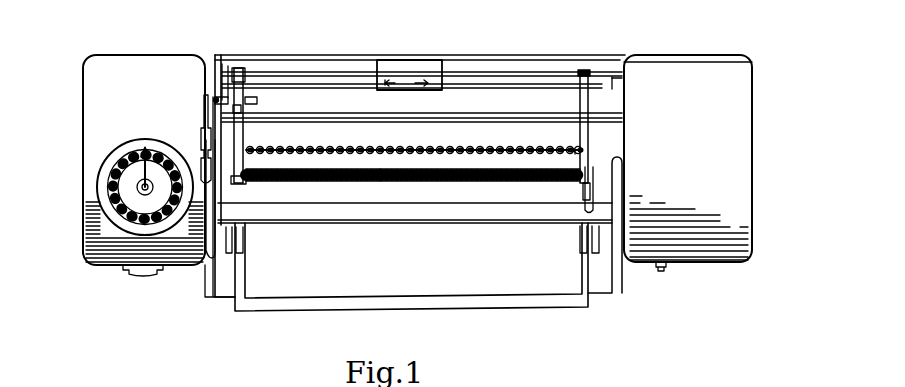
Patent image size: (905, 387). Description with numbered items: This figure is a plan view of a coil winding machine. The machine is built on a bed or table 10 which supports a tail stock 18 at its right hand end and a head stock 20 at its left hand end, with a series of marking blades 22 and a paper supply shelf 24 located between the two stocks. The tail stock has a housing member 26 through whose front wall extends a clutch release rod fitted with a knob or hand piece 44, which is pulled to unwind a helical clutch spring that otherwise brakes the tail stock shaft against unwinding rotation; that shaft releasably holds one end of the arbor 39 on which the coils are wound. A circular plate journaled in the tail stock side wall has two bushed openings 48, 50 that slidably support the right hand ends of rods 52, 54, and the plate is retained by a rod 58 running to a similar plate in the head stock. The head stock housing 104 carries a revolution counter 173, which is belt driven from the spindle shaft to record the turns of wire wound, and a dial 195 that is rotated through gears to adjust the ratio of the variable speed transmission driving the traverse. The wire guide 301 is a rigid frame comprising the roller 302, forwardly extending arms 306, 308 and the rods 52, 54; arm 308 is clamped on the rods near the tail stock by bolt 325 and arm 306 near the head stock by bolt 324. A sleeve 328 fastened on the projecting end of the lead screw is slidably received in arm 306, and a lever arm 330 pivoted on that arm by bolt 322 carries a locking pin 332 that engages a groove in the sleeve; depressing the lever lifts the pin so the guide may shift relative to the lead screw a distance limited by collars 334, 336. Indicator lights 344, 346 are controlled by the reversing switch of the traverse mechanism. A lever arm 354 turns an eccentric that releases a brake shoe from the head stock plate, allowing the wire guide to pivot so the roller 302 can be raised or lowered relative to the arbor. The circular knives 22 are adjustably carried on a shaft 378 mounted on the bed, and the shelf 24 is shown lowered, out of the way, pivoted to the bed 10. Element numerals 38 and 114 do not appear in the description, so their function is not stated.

The bed or table 10 is at (422, 267).
The tail stock 18 is at (752, 93).
The head stock 20 is at (80, 98).
The marking blades 22 is at (424, 146).
The paper supply shelf 24 is at (357, 304).
The housing member 26 is at (642, 66).
The bracket 38 is at (620, 262).
The arbor 39 is at (468, 220).
The knob or hand piece 44 is at (663, 272).
The opening 48 is at (620, 125).
The opening 50 is at (622, 68).
The rod 52 is at (612, 76).
The rod 54 is at (613, 119).
The rod 58 is at (556, 90).
The housing 104 is at (92, 144).
The rod 114 is at (213, 264).
The revolution counter 173 is at (128, 197).
The dial 195 is at (147, 277).
The wire guide 301 is at (382, 177).
The roller 302 is at (475, 179).
The arm 306 is at (244, 182).
The arm 308 is at (582, 135).
The bolt 322 is at (232, 107).
The bolt 324 is at (243, 78).
The bolt 325 is at (580, 73).
The sleeve 328 is at (216, 96).
The lever arm 330 is at (243, 141).
The locking pin 332 is at (214, 100).
The collar 334 is at (232, 82).
The collar 336 is at (249, 99).
The indicator light 344 is at (417, 82).
The indicator light 346 is at (393, 80).
The lever arm 354 is at (203, 162).
The shaft 378 is at (575, 152).